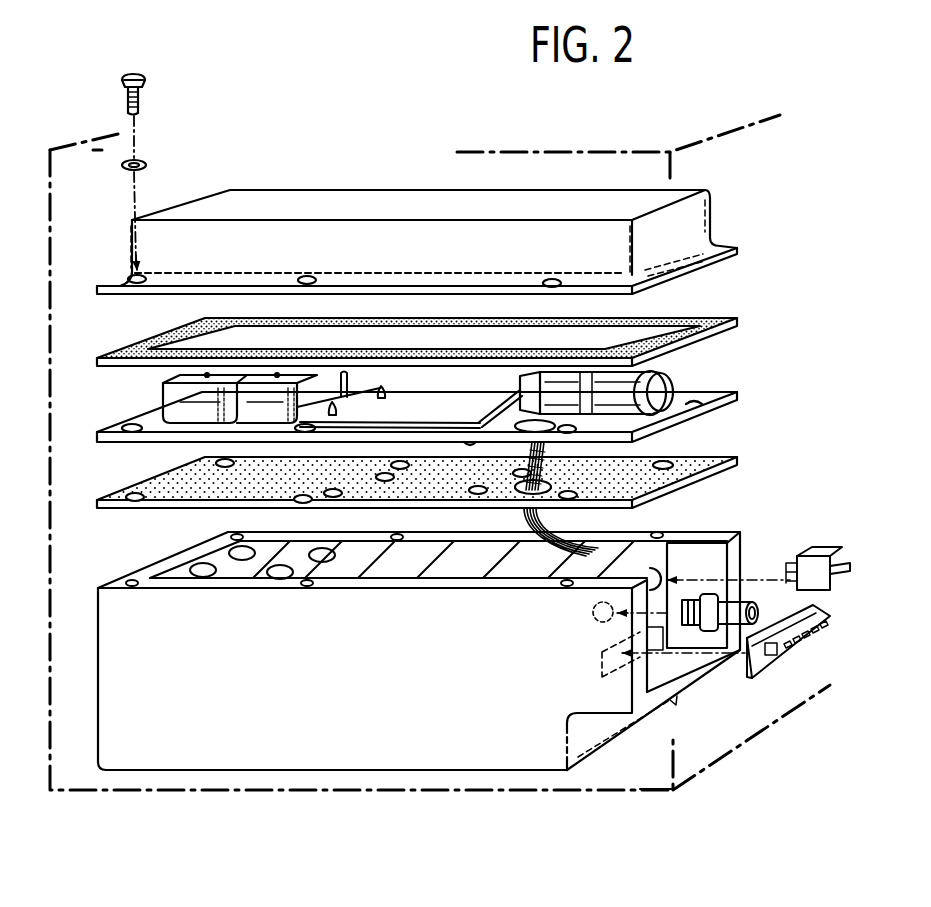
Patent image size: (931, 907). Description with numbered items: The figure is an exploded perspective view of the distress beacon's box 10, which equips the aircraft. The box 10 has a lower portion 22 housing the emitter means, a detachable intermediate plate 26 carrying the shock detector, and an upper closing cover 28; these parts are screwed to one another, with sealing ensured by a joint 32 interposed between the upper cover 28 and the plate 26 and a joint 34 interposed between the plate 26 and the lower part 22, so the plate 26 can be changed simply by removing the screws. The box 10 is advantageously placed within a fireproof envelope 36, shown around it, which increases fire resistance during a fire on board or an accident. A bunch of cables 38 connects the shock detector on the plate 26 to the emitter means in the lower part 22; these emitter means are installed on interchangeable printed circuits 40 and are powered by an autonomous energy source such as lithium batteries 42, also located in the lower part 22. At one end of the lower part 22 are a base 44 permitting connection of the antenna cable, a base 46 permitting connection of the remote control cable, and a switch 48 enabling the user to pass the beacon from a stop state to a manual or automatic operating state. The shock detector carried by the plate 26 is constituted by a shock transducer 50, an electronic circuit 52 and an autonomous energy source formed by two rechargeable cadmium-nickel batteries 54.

The box 10 is at (287, 797).
The lower portion 22 is at (400, 745).
The intermediate plate 26 is at (706, 400).
The upper closing cover 28 is at (323, 207).
The joint 32 is at (713, 322).
The joint 34 is at (173, 494).
The fireproof envelope 36 is at (650, 792).
The bunch of cables 38 is at (600, 547).
The printed circuits 40 is at (400, 562).
The lithium batteries 42 is at (207, 577).
The base 44 is at (700, 632).
The base 46 is at (772, 657).
The switch 48 is at (812, 552).
The shock transducer 50 is at (672, 370).
The electronic circuit 52 is at (386, 420).
The rechargeable cadmium-nickel batteries 54 is at (165, 410).